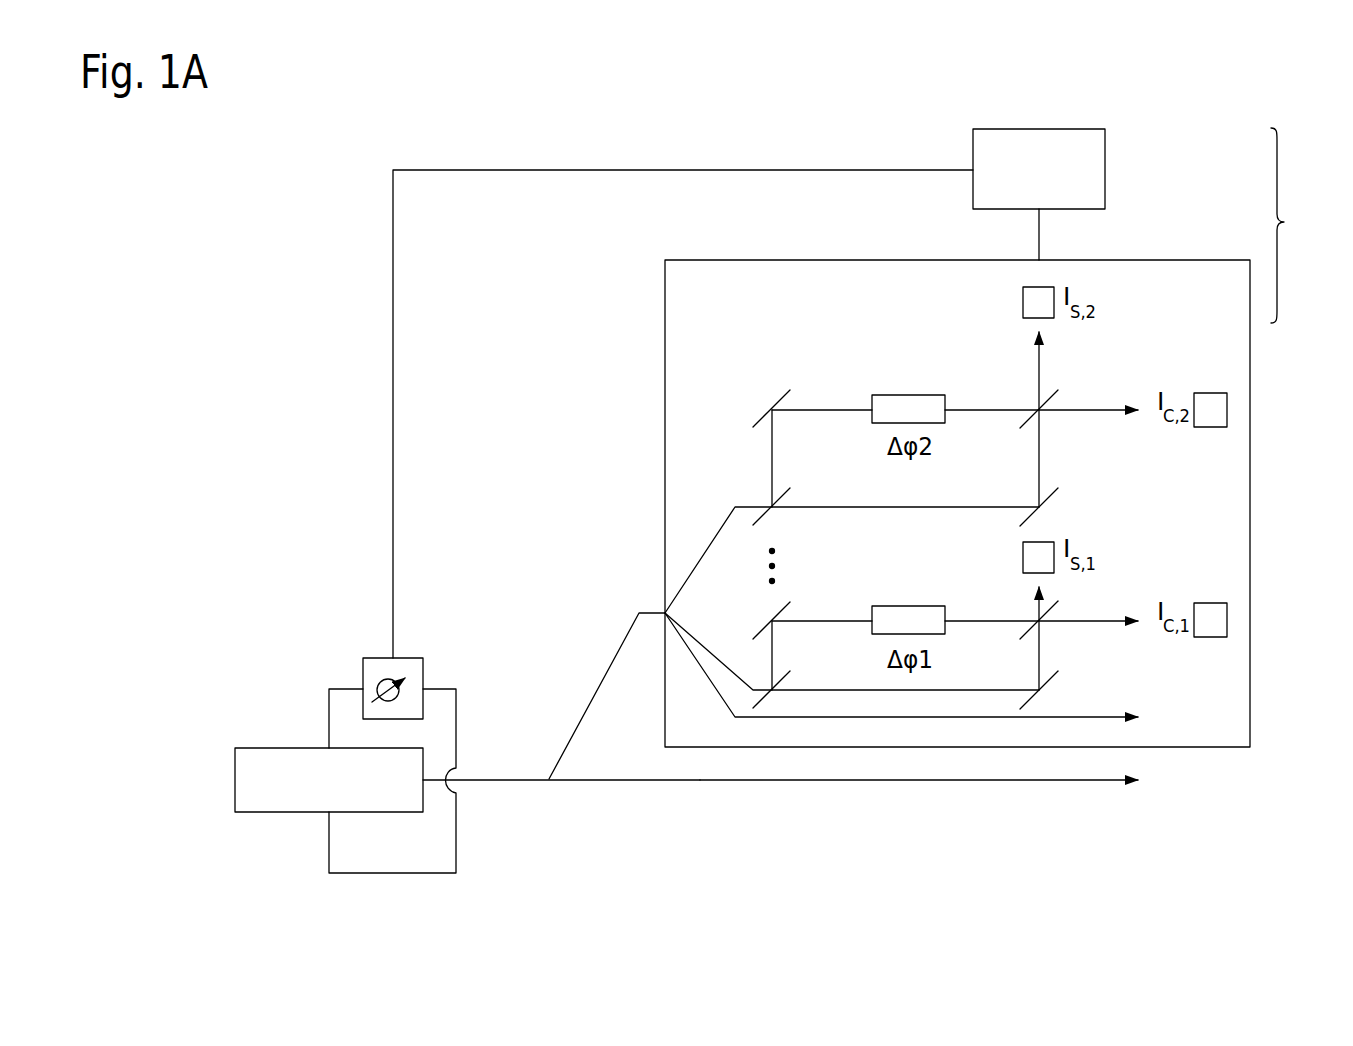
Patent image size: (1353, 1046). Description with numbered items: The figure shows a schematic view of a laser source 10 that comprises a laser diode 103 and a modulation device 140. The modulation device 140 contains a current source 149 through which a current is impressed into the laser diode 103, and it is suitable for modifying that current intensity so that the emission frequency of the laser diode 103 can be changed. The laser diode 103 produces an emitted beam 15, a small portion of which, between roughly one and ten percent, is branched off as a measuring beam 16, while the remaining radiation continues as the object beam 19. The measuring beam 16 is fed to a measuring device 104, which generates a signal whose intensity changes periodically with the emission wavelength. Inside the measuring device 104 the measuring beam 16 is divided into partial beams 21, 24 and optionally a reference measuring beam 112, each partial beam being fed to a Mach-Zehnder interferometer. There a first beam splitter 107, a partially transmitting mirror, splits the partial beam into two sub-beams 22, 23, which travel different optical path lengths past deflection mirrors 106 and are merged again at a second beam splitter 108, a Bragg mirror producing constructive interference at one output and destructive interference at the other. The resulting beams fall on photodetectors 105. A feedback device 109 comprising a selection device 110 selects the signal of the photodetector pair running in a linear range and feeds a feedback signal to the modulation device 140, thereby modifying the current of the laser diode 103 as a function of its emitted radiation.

The laser source 10 is at (262, 178).
The emitted beam 15 is at (508, 785).
The measuring beam 16 is at (583, 712).
The object beam 19 is at (1040, 782).
The partial beam 21 is at (700, 648).
The first sub-beam 22 is at (840, 690).
The second sub-beam 23 is at (780, 650).
The partial beam 24 is at (703, 552).
The laser diode 103 is at (268, 795).
The measuring device 104 is at (718, 255).
The photodetectors 105 is at (1270, 622).
The deflection mirrors 106 is at (780, 390).
The first beam splitter 107 is at (765, 520).
The second beam splitter 108 is at (1050, 397).
The feedback device 109 is at (1298, 225).
The selection device 110 is at (1088, 165).
The reference measuring beam 112 is at (930, 673).
The modulation device 140 is at (425, 668).
The current source 149 is at (376, 680).